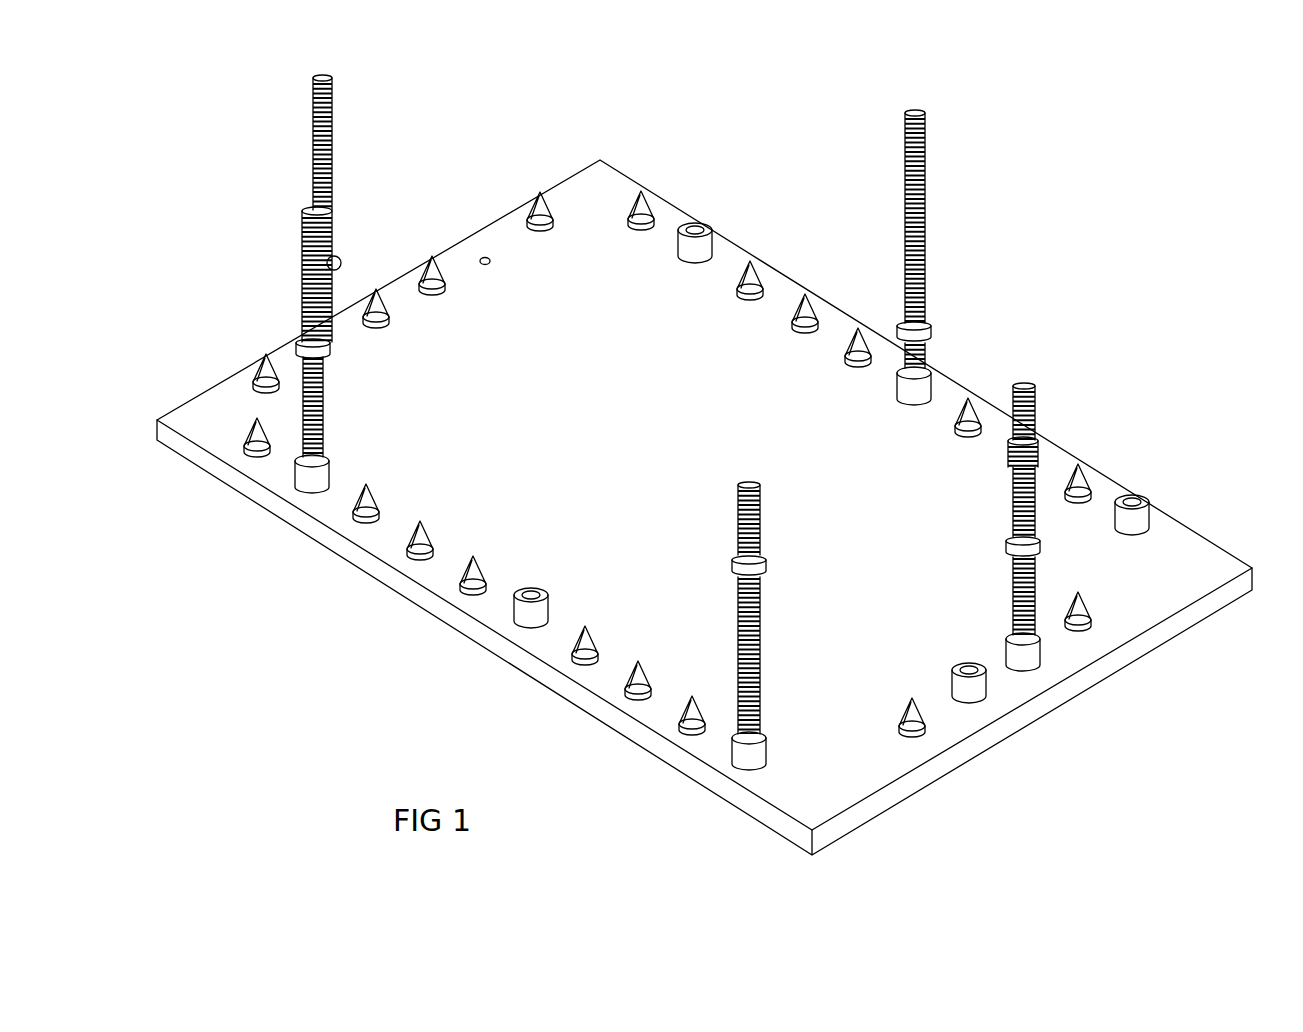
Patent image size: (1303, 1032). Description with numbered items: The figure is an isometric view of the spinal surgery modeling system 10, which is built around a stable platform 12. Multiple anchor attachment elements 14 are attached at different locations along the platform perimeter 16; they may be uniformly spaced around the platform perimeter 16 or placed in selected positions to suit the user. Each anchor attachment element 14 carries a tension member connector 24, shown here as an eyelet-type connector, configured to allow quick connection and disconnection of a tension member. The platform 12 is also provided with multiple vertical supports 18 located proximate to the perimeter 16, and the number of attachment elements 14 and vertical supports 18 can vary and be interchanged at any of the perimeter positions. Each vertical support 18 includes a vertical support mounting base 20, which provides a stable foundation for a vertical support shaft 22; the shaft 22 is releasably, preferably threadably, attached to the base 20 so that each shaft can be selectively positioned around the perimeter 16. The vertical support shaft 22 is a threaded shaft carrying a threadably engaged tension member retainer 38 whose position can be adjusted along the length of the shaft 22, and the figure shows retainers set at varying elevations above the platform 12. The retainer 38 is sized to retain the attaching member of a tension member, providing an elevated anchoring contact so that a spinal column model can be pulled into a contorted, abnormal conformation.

The spinal surgery modeling system 10 is at (1080, 257).
The platform 12 is at (305, 300).
The anchor attachment elements 14 is at (662, 205).
The platform perimeter 16 is at (205, 390).
The vertical supports 18 is at (333, 150).
The vertical support mounting base 20 is at (712, 228).
The vertical support shaft 22 is at (333, 215).
The tension member connector 24 is at (440, 262).
The tension member retainer 38 is at (342, 266).